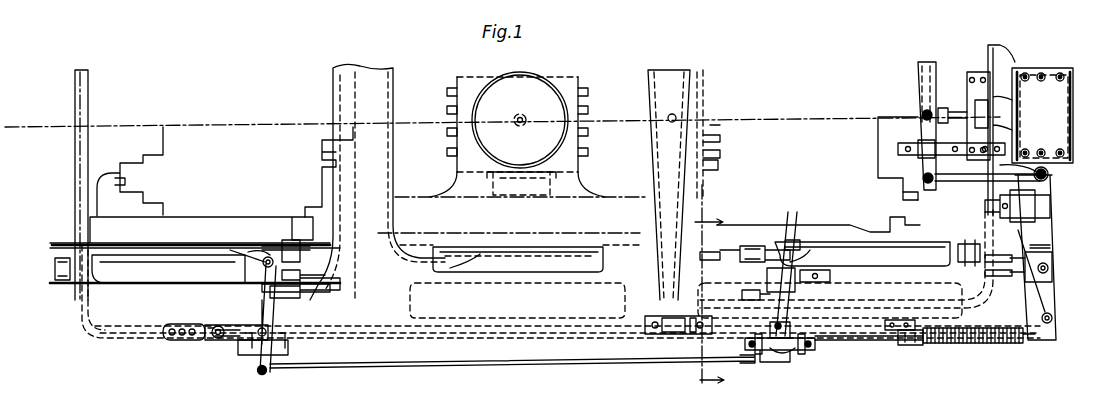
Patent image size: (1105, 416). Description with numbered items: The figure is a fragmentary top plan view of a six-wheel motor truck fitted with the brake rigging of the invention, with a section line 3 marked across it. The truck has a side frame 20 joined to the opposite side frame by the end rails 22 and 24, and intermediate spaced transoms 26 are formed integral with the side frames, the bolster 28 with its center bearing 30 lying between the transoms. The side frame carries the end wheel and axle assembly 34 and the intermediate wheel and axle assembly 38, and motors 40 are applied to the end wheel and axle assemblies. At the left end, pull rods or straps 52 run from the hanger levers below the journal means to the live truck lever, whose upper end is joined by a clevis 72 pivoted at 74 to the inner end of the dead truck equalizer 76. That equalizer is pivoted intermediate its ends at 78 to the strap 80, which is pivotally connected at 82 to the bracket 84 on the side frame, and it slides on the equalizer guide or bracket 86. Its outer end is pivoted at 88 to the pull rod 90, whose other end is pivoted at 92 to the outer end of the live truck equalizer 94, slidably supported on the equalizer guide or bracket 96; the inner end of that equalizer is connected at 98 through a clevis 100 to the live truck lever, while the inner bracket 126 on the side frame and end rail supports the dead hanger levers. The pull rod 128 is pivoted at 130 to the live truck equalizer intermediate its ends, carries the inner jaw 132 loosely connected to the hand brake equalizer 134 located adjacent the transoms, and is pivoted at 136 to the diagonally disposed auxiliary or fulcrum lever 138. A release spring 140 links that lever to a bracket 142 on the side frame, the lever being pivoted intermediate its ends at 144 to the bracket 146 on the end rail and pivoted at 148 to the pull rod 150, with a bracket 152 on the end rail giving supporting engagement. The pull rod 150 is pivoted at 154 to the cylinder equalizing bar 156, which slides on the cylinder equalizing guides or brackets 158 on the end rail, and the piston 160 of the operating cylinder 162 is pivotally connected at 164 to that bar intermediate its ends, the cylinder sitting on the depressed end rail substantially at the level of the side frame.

The section line 3- 3 is at (709, 293).
The side frame 20 is at (97, 316).
The end rail 22 is at (75, 166).
The end rail 24 is at (1010, 51).
The transoms 26 is at (366, 72).
The bolster 28 is at (570, 79).
The center bearing 30 is at (505, 80).
The end wheel and axle assembly 34 is at (133, 270).
The intermediate wheel and axle assembly 38 is at (496, 262).
The motors 40 is at (205, 130).
The pull rods or straps 52 is at (152, 246).
The clevis 72 is at (292, 252).
The pivot 74 is at (262, 252).
The dead truck equalizer 76 is at (268, 300).
The pivot 78 is at (253, 352).
The strap 80 is at (229, 345).
The pivot 82 is at (212, 325).
The bracket 84 is at (175, 342).
The equalizer guide or bracket 86 is at (288, 350).
The pivot 88 is at (264, 376).
The pull rod 90 is at (463, 365).
The pivot 92 is at (774, 362).
The live truck equalizer 94 is at (750, 299).
The equalizer guide or bracket 96 is at (797, 352).
The pivot 98 is at (788, 212).
The clevis 100 is at (746, 248).
The inner bracket 126 is at (958, 250).
The pull rod 128 is at (869, 330).
The pivot 130 is at (790, 312).
The inner jaw 132 is at (656, 336).
The hand brake equalizer 134 is at (722, 150).
The pivot 136 is at (1052, 319).
The auxiliary or fulcrum lever 138 is at (1035, 292).
The release spring 140 is at (1002, 346).
The bracket 142 is at (897, 345).
The pivot 144 is at (1050, 268).
The bracket 146 is at (1042, 252).
The pivot 148 is at (1048, 176).
The pull rod 150 is at (961, 183).
The bracket 152 is at (1050, 206).
The pivot 154 is at (922, 180).
The cylinder equalizing bar 156 is at (917, 78).
The cylinder equalizing guides or brackets 158 is at (898, 148).
The piston 160 is at (957, 108).
The operating cylinder 162 is at (1042, 115).
The pivot 164 is at (922, 113).